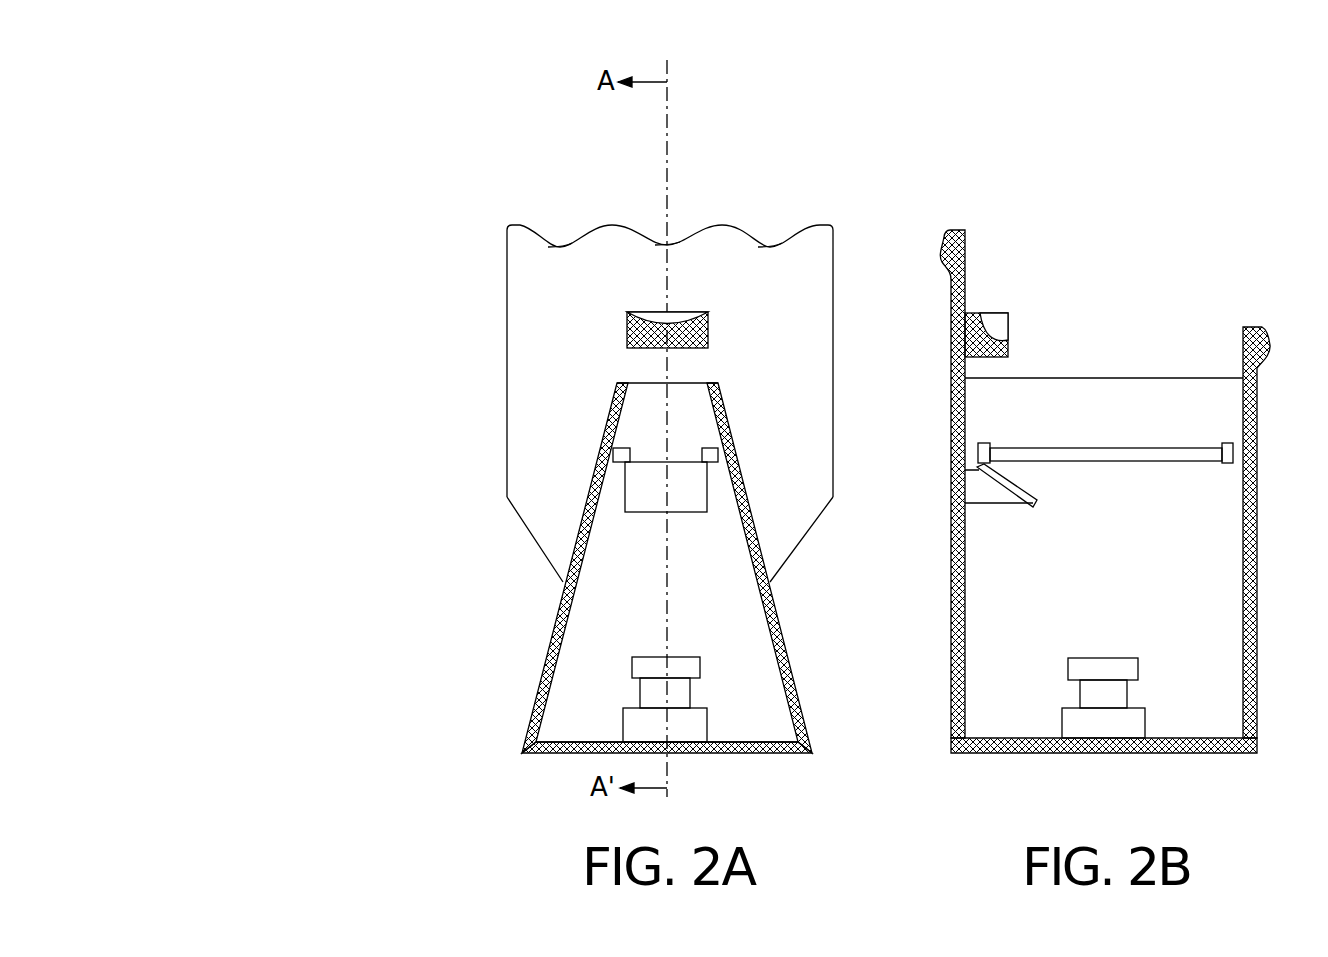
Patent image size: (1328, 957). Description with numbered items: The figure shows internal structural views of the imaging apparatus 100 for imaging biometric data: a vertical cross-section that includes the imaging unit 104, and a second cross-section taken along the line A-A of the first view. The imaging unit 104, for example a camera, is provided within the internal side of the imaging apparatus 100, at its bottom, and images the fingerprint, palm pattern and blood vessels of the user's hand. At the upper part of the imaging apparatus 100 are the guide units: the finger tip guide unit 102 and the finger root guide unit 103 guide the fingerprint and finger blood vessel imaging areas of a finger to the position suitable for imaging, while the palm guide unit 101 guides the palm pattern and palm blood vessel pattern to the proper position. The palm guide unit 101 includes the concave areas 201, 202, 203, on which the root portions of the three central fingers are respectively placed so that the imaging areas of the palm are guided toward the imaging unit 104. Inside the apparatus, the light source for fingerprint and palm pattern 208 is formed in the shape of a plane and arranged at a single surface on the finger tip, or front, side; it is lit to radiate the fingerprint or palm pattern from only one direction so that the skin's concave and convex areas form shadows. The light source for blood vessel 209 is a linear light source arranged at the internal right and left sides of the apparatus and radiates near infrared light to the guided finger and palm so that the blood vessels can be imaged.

In FIG. 2A, the imaging apparatus 100 is at (629, 566).
In FIG. 2A, the palm guide unit 101 is at (820, 223).
In FIG. 2B, the palm guide unit 101 is at (955, 228).
In FIG. 2A, the finger tip guide unit 102 is at (627, 338).
In FIG. 2B, the finger tip guide unit 102 is at (993, 318).
In FIG. 2B, the finger root guide unit 103 is at (1255, 325).
In FIG. 2A, the imaging unit 104 is at (635, 727).
In FIG. 2B, the imaging unit 104 is at (1148, 712).
In FIG. 2A, the concave area 201 is at (560, 247).
In FIG. 2A, the concave area 202 is at (652, 243).
In FIG. 2A, the concave area 203 is at (770, 243).
In FIG. 2A, the light source for fingerprint and palm pattern 208 is at (735, 778).
In FIG. 2B, the light source for fingerprint and palm pattern 208 is at (1005, 495).
In FIG. 2A, the light source for blood vessel 209 is at (732, 437).
In FIG. 2B, the light source for blood vessel 209 is at (1098, 448).